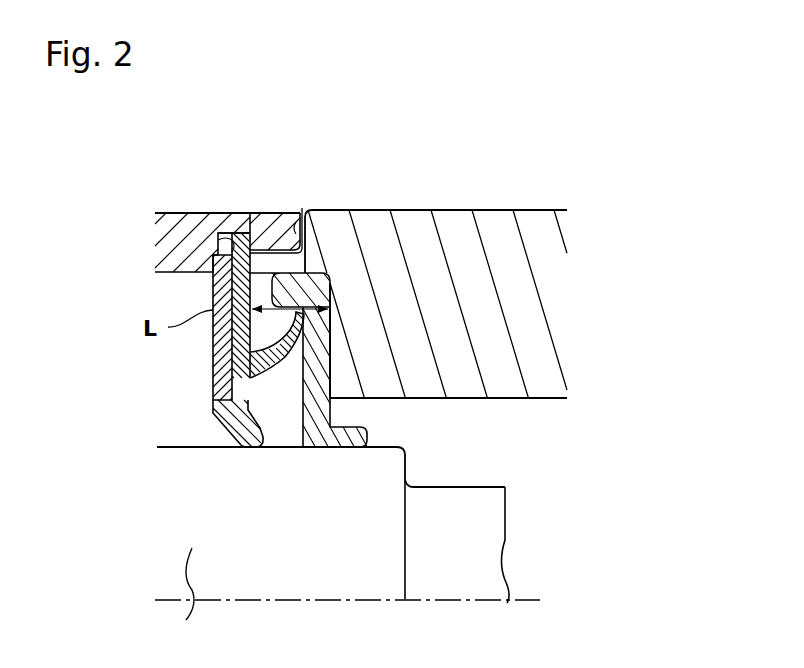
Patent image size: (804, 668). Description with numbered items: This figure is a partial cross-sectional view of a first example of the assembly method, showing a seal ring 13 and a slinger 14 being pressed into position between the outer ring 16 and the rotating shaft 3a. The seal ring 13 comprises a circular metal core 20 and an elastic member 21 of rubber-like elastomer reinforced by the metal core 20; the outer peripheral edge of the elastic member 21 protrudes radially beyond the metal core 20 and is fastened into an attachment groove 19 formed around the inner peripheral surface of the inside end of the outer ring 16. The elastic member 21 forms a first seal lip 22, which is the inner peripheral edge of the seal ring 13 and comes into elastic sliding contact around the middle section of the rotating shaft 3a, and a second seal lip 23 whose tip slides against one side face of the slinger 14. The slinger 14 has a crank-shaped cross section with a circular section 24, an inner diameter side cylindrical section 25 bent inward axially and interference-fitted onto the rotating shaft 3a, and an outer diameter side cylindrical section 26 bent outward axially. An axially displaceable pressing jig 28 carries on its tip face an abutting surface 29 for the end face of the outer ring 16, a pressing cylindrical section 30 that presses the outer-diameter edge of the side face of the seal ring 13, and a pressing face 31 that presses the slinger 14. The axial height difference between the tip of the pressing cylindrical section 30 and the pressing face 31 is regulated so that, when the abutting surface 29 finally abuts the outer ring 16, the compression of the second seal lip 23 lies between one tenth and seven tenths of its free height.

The seal ring 13 is at (232, 232).
The slinger 14 is at (333, 320).
The outer ring 16 is at (175, 213).
The attachment groove 19 is at (247, 213).
The metal core 20 is at (213, 293).
The elastic member 21 is at (230, 350).
The first seal lip 22 is at (250, 447).
The second seal lip 23 is at (302, 320).
The circular section 24 is at (330, 352).
The inner diameter side cylindrical section 25 is at (340, 447).
The outer diameter side cylindrical section 26 is at (302, 290).
The pressing jig 28 is at (518, 285).
The abutting surface 29 is at (310, 207).
The pressing cylindrical section 30 is at (300, 210).
The pressing face 31 is at (230, 372).
The rotating shaft 3a is at (347, 599).